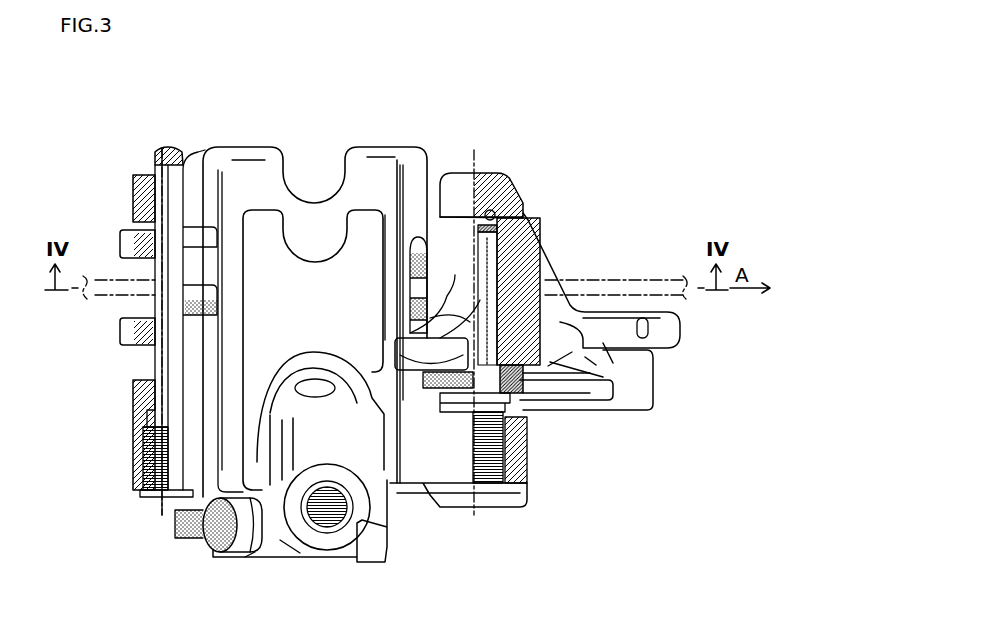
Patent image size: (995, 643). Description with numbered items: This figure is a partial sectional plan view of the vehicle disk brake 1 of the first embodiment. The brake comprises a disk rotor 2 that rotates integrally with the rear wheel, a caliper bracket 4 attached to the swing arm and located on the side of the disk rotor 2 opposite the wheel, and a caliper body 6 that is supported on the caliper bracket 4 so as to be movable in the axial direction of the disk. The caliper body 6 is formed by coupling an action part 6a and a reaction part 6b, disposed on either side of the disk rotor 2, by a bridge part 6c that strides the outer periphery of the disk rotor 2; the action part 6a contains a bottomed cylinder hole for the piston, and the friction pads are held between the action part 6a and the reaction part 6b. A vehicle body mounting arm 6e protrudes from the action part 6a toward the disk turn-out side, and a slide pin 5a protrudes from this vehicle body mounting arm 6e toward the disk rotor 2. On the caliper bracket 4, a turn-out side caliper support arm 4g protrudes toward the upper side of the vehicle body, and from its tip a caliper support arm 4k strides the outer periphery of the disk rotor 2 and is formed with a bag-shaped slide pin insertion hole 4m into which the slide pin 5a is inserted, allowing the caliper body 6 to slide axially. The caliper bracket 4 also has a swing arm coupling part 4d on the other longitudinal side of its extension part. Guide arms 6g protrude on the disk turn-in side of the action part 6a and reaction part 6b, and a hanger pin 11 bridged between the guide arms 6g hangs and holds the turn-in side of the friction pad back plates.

The vehicle disk brake 1 is at (388, 79).
The disk rotor 2 is at (642, 275).
The caliper bracket 4 is at (488, 168).
The slide pin insertion hole 4m is at (509, 190).
The caliper support arm 4k is at (540, 265).
The turn-out side caliper support arm 4g is at (549, 382).
The swing arm coupling part 4d is at (597, 402).
The slide pin 5a is at (488, 294).
The caliper body 6 is at (246, 574).
The action part 6a is at (292, 552).
The reaction part 6b is at (380, 152).
The bridge part 6c is at (375, 273).
The vehicle body mounting arm 6e is at (413, 475).
The guide arm 6g is at (135, 200).
The hanger pin 11 is at (160, 390).